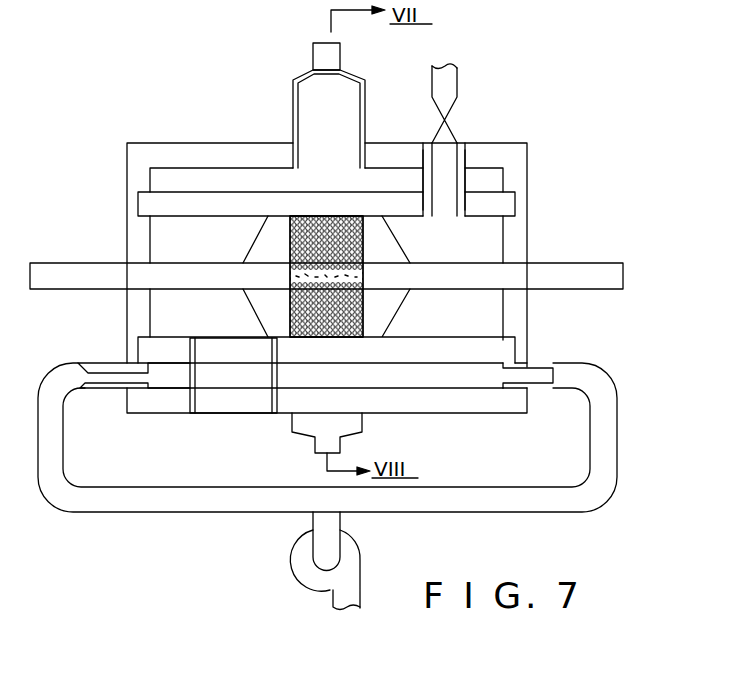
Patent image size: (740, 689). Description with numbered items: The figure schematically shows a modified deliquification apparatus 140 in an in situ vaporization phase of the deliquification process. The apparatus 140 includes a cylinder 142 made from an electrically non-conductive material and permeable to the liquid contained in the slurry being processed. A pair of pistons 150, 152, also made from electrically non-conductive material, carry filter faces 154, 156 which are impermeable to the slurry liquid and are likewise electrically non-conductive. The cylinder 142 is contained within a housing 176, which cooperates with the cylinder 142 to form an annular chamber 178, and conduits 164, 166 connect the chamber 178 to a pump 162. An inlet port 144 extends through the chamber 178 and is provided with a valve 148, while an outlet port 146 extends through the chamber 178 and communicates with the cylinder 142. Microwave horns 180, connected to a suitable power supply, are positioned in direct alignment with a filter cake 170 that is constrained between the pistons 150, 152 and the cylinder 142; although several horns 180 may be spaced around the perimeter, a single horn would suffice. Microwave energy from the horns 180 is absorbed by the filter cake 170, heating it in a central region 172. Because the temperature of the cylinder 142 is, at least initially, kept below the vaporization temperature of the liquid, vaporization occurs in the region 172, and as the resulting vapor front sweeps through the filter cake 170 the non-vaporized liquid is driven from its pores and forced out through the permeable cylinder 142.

The deliquification apparatus 140 is at (113, 134).
The cylinder 142 is at (197, 200).
The inlet port 144 is at (447, 187).
The outlet port 146 is at (217, 402).
The valve 148 is at (457, 100).
The piston 150 is at (253, 243).
The piston 152 is at (397, 310).
The filter face 154 is at (288, 305).
The filter face 156 is at (363, 232).
The pump 162 is at (300, 553).
The conduit 164 is at (62, 440).
The conduit 166 is at (617, 445).
The filter cake 170 is at (365, 292).
The central region 172 is at (297, 277).
The housing 176 is at (493, 413).
The annular chamber 178 is at (405, 382).
The microwave horn 180 is at (293, 80).